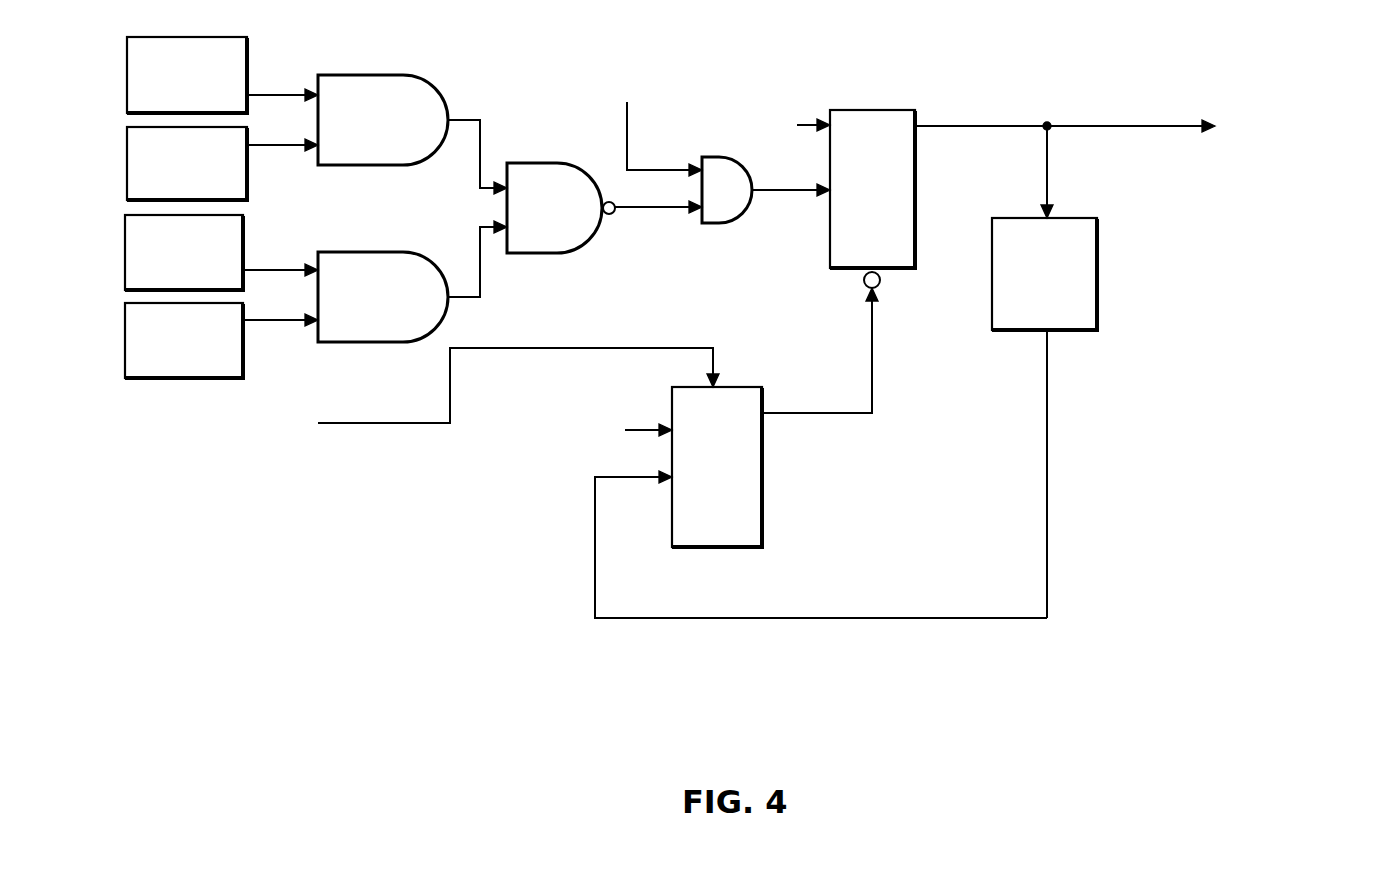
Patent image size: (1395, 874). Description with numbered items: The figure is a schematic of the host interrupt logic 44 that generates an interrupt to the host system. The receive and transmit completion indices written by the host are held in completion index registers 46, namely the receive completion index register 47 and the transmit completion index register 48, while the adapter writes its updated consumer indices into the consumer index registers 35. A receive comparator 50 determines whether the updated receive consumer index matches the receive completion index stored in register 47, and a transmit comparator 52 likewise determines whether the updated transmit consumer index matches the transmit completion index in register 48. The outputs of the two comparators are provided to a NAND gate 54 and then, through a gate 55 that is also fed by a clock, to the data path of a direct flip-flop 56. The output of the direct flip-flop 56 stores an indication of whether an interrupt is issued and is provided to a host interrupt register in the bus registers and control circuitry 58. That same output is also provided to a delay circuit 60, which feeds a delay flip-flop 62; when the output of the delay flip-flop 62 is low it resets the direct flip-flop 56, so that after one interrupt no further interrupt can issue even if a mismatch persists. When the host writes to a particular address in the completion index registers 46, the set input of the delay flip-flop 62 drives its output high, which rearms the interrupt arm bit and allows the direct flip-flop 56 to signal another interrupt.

The consumer index registers 35 is at (127, 77).
The receive completion index register 47 is at (127, 157).
The transmit completion index register 48 is at (125, 327).
The receive comparator 50 is at (442, 90).
The transmit comparator 52 is at (410, 252).
The NAND gate 54 is at (583, 165).
The AND gate 55 is at (745, 158).
The direct flip-flop 56 is at (915, 202).
The bus registers and control circuitry 58 is at (1146, 160).
The delay circuit 60 is at (1097, 267).
The delay flip-flop 62 is at (762, 455).
The completion index registers 46 is at (464, 469).
The host interrupt logic 44 is at (1186, 409).